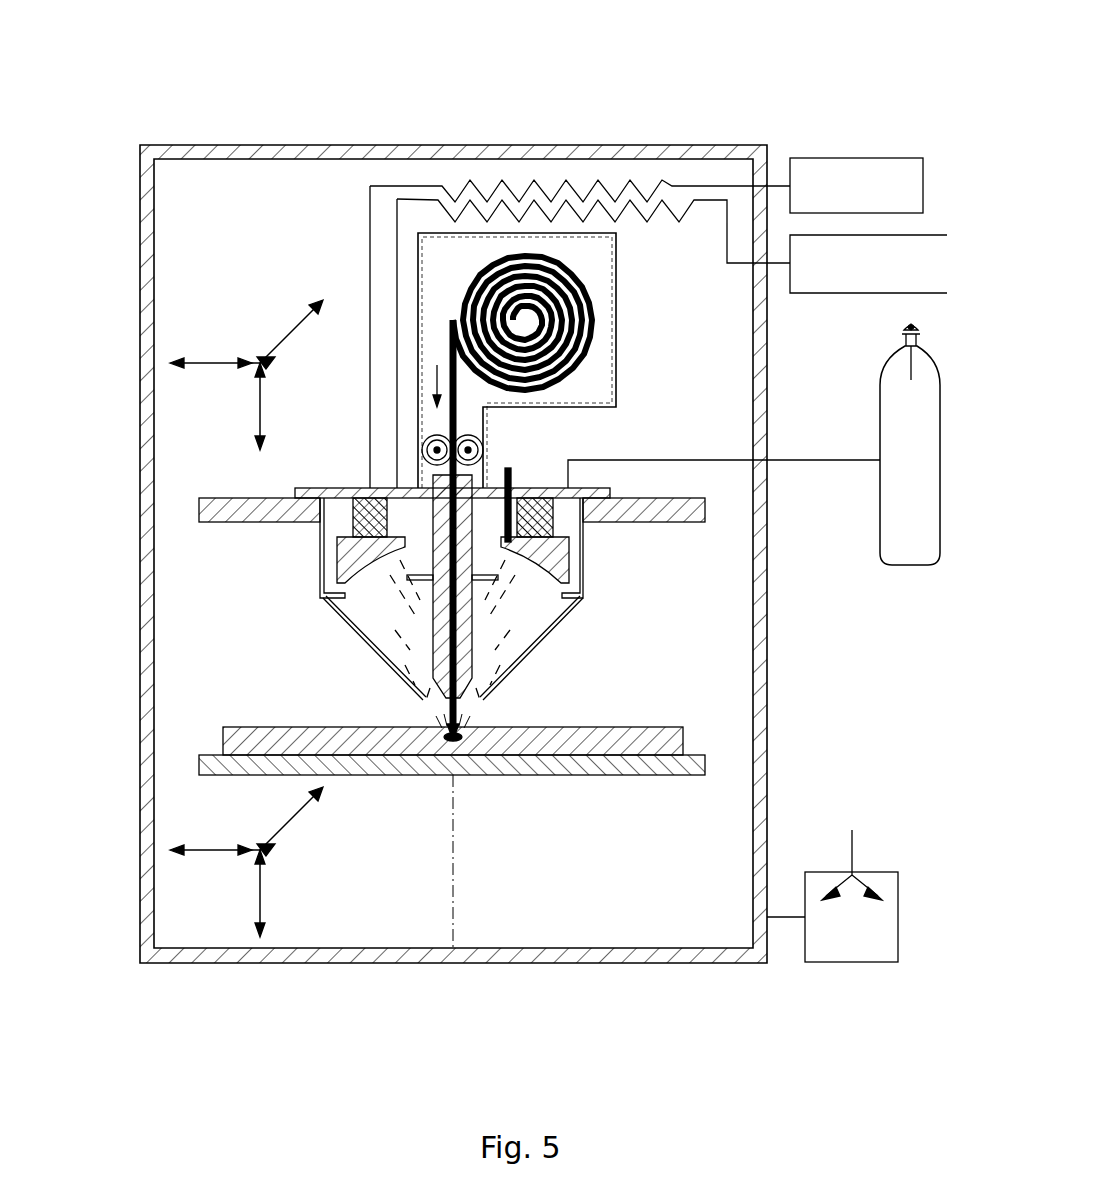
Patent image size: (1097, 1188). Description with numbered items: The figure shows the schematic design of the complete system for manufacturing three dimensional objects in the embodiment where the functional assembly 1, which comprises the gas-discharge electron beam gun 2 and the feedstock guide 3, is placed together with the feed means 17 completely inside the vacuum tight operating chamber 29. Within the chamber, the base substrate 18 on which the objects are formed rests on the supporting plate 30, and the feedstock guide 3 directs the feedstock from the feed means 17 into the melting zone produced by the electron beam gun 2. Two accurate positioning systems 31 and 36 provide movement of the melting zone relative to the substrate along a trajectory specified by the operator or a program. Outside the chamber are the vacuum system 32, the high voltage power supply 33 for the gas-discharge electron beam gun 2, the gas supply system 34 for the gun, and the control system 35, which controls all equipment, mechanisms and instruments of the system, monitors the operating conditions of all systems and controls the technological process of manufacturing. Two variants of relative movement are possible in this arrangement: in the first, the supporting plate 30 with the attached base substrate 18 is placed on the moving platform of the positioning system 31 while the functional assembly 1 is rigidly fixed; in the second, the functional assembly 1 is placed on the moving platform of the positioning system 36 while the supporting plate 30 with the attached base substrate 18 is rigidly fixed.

The functional assembly 1 is at (295, 492).
The gas-discharge electron beam gun 2 is at (322, 552).
The feedstock guide 3 is at (436, 630).
The feed means 17 is at (472, 450).
The base substrate 18 is at (271, 735).
The vacuum tight operating chamber 29 is at (144, 371).
The supporting plate 30 is at (221, 774).
The positioning system 31 is at (260, 850).
The vacuum system 32 is at (883, 880).
The high voltage power supply 33 is at (947, 235).
The gas supply system 34 is at (910, 550).
The control system 35 is at (848, 165).
The positioning system 36 is at (260, 363).